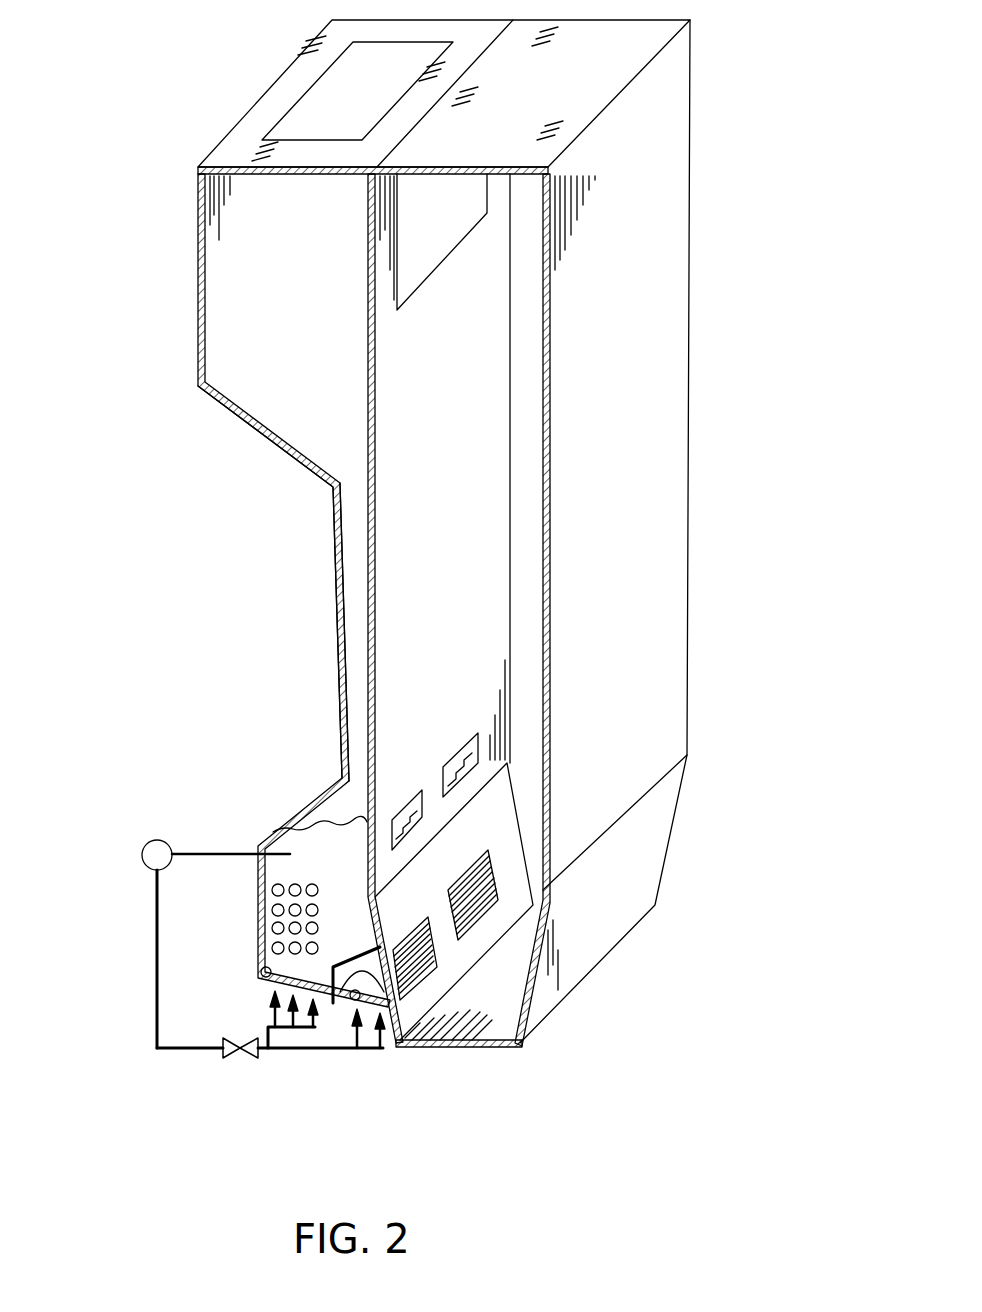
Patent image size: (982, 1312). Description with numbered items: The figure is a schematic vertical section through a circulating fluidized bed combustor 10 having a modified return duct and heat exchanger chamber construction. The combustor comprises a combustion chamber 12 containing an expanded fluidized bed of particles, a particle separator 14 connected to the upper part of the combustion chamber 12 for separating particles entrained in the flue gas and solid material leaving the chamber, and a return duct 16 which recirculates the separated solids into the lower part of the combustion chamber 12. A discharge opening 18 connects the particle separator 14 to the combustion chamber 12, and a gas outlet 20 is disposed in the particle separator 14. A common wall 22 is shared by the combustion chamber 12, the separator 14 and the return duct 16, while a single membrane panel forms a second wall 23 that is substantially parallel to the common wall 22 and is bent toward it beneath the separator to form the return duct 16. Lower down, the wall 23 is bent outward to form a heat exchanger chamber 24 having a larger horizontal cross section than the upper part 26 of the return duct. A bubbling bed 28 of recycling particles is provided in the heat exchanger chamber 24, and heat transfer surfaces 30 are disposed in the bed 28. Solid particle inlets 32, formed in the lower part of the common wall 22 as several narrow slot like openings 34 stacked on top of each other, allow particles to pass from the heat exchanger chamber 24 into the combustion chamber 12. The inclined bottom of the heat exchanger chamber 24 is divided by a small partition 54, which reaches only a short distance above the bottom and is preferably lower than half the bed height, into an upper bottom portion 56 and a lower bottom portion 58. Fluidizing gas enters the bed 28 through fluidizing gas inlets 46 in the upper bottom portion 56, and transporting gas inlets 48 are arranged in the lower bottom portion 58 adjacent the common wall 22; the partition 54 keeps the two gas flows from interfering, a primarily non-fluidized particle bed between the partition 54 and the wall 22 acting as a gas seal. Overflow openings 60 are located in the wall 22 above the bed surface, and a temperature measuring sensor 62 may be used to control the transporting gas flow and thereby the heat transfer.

The solid fuel combustion apparatus 10 is at (723, 333).
The combustion chamber 12 is at (528, 457).
The particle separator 14 is at (237, 302).
The return duct 16 is at (153, 647).
The discharge opening 18 is at (420, 253).
The gas outlet 20 is at (306, 125).
The common wall 22 is at (365, 565).
The second wall 23 is at (332, 502).
The heat exchanger chamber 24 is at (328, 835).
The upper part of the return duct 26 is at (350, 622).
The bubbling bed 28 is at (317, 877).
The heat transfer surfaces 30 is at (280, 912).
The solid particle inlets 32 is at (488, 855).
The slot like openings 34 is at (482, 882).
The fluidizing gas inlets 46 is at (268, 1020).
The transporting gas inlets 48 is at (350, 1033).
The partition 54 is at (397, 1040).
The upper bottom portion 56 is at (263, 967).
The lower bottom portion 58 is at (355, 995).
The overflow openings 60 is at (460, 752).
The temperature measuring sensor 62 is at (142, 848).